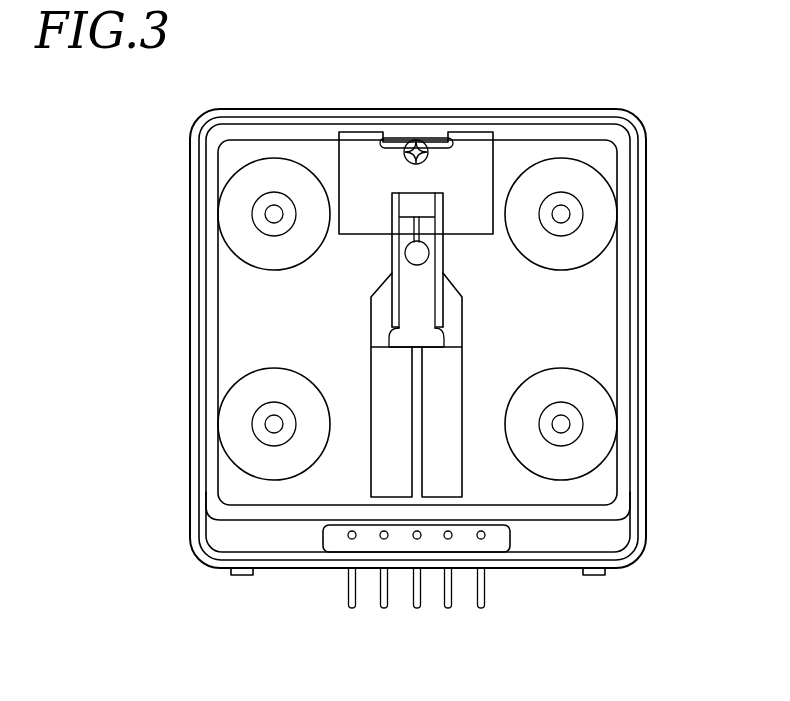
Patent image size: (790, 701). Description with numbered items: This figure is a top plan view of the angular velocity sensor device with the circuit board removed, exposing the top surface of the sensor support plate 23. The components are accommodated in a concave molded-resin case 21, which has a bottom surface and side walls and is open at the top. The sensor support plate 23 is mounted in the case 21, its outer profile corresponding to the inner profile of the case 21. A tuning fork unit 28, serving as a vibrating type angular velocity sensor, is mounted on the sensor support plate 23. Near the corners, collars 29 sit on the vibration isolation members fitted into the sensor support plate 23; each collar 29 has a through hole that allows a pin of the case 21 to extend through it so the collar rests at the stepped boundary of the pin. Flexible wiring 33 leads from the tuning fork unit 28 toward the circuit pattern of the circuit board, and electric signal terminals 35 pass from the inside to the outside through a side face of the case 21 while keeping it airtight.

The case 21 is at (607, 111).
The sensor support plate 23 is at (600, 350).
The tuning fork unit 28 is at (474, 313).
The collars 29 is at (598, 192).
The flexible wiring 33 is at (469, 152).
The electric signal terminals 35 is at (476, 621).